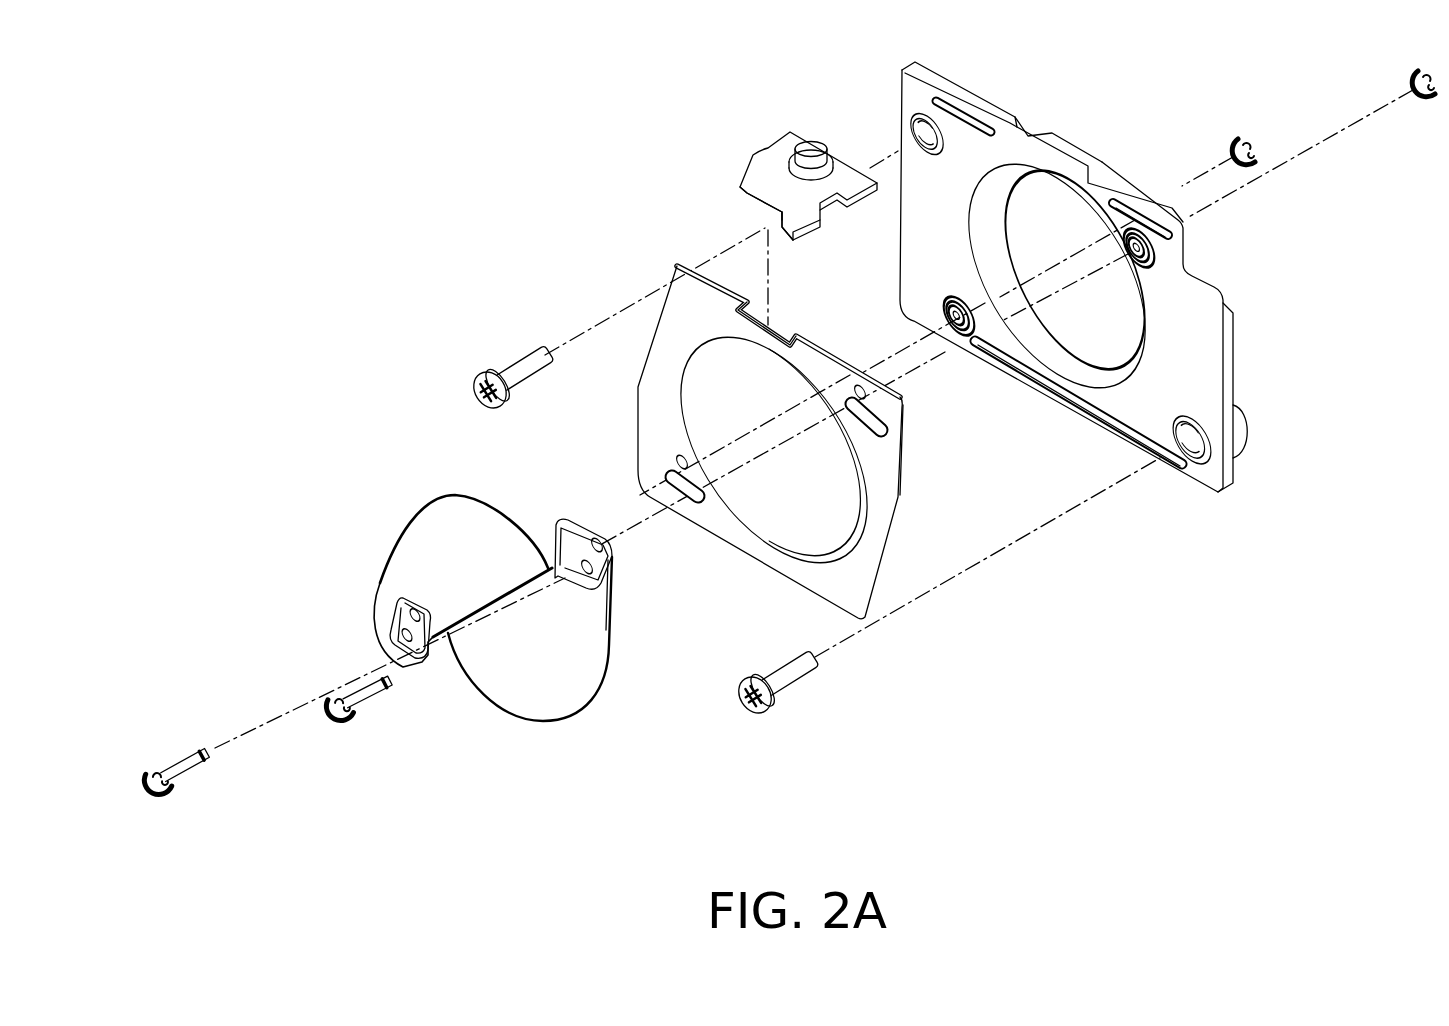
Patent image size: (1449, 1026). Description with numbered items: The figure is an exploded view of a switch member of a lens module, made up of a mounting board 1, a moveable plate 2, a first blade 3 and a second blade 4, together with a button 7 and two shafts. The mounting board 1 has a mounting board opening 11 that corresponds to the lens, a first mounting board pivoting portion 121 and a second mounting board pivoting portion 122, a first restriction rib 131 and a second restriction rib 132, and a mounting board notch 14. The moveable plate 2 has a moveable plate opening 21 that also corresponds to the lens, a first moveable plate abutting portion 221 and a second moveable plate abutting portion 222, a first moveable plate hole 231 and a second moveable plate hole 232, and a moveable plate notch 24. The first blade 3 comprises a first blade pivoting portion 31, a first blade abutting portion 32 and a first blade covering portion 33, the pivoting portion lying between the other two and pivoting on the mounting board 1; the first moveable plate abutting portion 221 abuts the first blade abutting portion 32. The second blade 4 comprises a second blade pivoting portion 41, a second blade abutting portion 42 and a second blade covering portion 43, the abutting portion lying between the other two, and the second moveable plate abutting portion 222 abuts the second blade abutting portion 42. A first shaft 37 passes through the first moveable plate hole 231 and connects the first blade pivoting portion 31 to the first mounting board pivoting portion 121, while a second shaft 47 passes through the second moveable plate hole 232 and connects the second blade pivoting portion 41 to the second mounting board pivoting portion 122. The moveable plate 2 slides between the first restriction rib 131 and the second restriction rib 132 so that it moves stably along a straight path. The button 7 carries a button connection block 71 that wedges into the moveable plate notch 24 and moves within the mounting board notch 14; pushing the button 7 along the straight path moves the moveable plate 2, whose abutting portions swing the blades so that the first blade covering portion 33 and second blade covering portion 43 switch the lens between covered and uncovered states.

The mounting board 1 is at (903, 48).
The mounting board opening 11 is at (1063, 210).
The mounting board notch 14 is at (1030, 135).
The first mounting board pivoting portion 121 is at (1160, 245).
The second mounting board pivoting portion 122 is at (950, 310).
The first restriction rib 131 is at (1128, 205).
The second restriction rib 132 is at (1170, 470).
The moveable plate 2 is at (670, 268).
The moveable plate opening 21 is at (850, 510).
The moveable plate notch 24 is at (786, 330).
The first moveable plate abutting portion 221 is at (858, 385).
The second moveable plate abutting portion 222 is at (673, 450).
The first moveable plate hole 231 is at (905, 425).
The second moveable plate hole 232 is at (665, 487).
The first blade 3 is at (568, 722).
The first blade pivoting portion 31 is at (592, 588).
The first blade abutting portion 32 is at (600, 550).
The first blade covering portion 33 is at (590, 673).
The first shaft 37 is at (372, 692).
The second blade 4 is at (428, 488).
The second blade pivoting portion 41 is at (398, 635).
The second blade abutting portion 42 is at (402, 612).
The second blade covering portion 43 is at (425, 532).
The second shaft 47 is at (180, 760).
The button 7 is at (773, 125).
The button connection block 71 is at (740, 200).